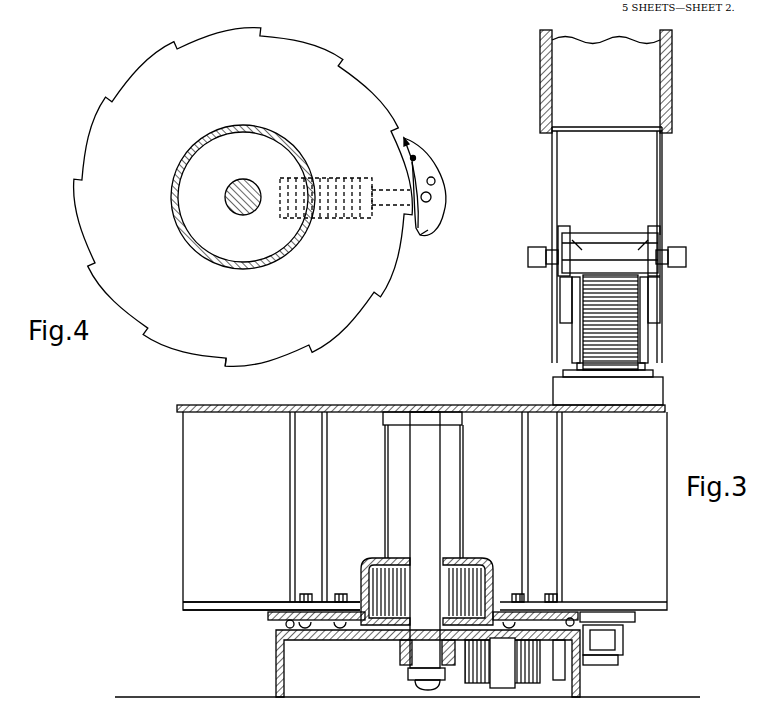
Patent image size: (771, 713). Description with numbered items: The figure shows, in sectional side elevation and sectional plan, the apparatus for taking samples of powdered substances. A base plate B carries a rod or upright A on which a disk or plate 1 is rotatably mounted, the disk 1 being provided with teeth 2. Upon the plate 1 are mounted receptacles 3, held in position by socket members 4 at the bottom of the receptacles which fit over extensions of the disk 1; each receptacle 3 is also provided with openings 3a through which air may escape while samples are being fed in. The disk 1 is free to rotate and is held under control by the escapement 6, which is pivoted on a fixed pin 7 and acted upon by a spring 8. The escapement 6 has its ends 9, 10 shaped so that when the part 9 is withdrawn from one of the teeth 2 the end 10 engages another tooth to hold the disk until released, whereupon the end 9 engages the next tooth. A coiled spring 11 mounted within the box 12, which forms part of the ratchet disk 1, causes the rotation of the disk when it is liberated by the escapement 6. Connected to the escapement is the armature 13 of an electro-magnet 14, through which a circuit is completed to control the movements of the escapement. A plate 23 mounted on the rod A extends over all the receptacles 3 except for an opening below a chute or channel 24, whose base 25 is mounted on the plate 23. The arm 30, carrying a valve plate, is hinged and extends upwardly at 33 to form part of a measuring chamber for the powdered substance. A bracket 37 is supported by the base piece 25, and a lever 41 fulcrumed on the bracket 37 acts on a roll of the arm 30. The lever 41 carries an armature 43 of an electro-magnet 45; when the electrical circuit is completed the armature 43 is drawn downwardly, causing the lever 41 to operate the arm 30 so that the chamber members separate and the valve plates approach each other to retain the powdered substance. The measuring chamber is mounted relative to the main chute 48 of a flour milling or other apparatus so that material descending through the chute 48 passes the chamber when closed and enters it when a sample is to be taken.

In FIG. 4, the disk 1 is at (357, 107).
In FIG. 3, the disk 1 is at (274, 617).
In FIG. 4, the teeth 2 is at (224, 366).
In FIG. 3, the receptacles 3 is at (195, 536).
In FIG. 3, the openings 3a is at (407, 705).
In FIG. 3, the socket members 4 is at (220, 607).
In FIG. 4, the escapement 6 is at (443, 214).
In FIG. 3, the escapement 6 is at (630, 620).
In FIG. 4, the fixed pin 7 is at (437, 179).
In FIG. 3, the fixed pin 7 is at (612, 642).
In FIG. 4, the spring 8 is at (416, 157).
In FIG. 4, the end 9 is at (402, 138).
In FIG. 4, the end 10 is at (419, 232).
In FIG. 3, the coiled spring 11 is at (480, 583).
In FIG. 3, the box 12 is at (366, 558).
In FIG. 4, the armature 13 is at (376, 218).
In FIG. 3, the armature 13 is at (560, 680).
In FIG. 4, the electro-magnet 14 is at (316, 222).
In FIG. 3, the electro-magnet 14 is at (527, 668).
In FIG. 3, the plate 23 is at (418, 399).
In FIG. 3, the chute 24 is at (660, 200).
In FIG. 3, the base 25 is at (650, 395).
In FIG. 3, the arm 30 is at (558, 312).
In FIG. 3, the box member 33 is at (662, 172).
In FIG. 3, the bracket 37 is at (558, 233).
In FIG. 3, the lever 41 is at (532, 268).
In FIG. 3, the armature 43 is at (597, 250).
In FIG. 3, the electro-magnet 45 is at (630, 343).
In FIG. 3, the main chute 48 is at (672, 95).
In FIG. 4, the rod or upright A is at (243, 216).
In FIG. 3, the rod or upright A is at (418, 430).
In FIG. 3, the base plate B is at (286, 672).